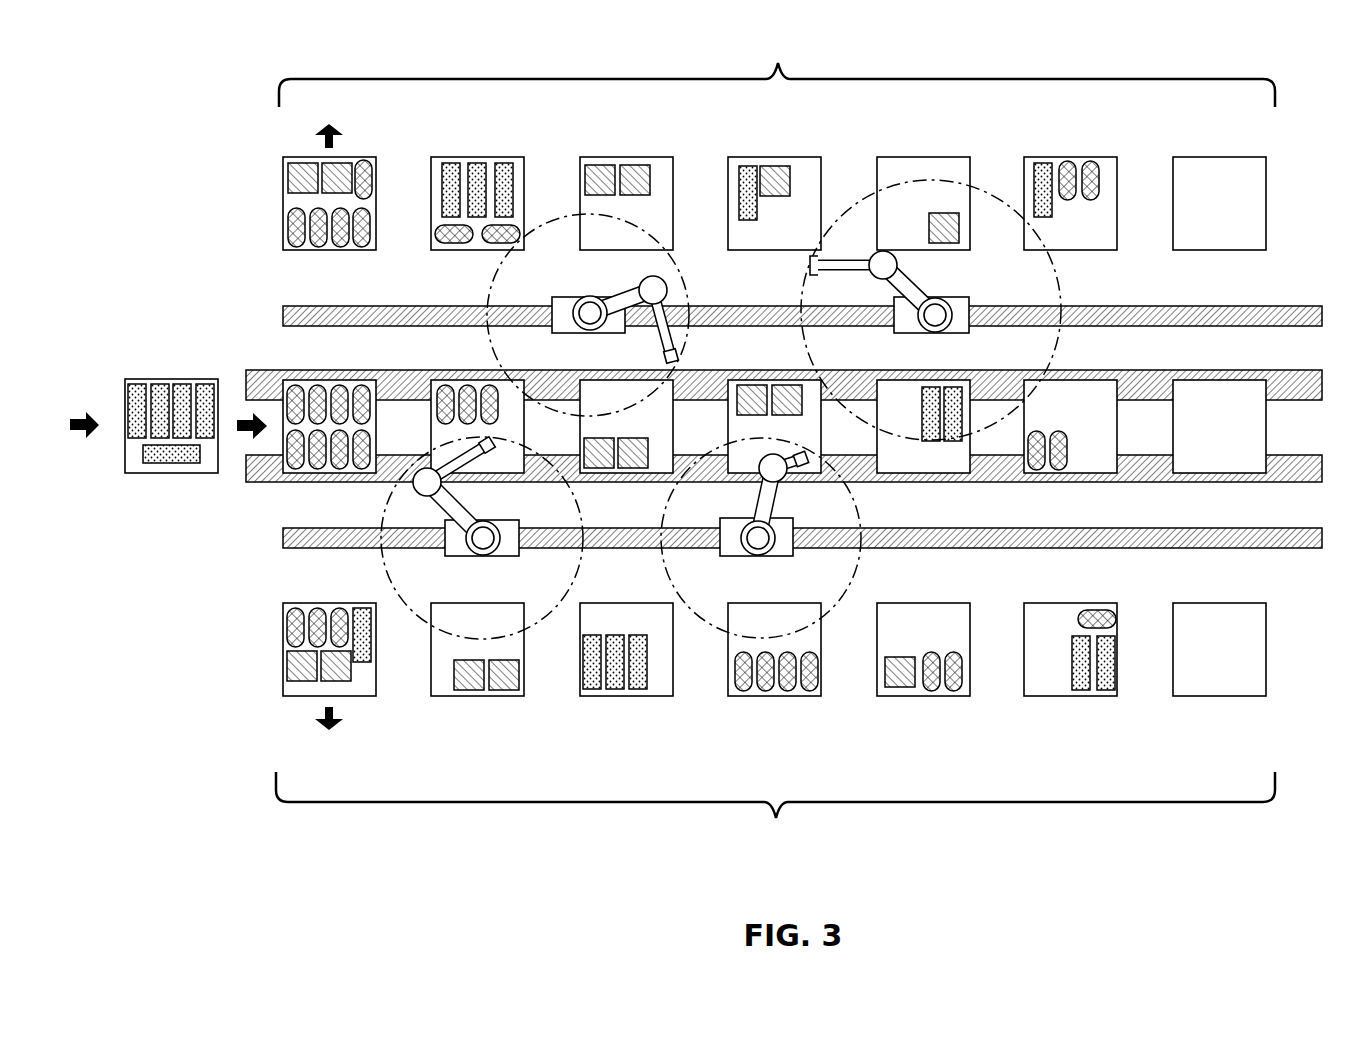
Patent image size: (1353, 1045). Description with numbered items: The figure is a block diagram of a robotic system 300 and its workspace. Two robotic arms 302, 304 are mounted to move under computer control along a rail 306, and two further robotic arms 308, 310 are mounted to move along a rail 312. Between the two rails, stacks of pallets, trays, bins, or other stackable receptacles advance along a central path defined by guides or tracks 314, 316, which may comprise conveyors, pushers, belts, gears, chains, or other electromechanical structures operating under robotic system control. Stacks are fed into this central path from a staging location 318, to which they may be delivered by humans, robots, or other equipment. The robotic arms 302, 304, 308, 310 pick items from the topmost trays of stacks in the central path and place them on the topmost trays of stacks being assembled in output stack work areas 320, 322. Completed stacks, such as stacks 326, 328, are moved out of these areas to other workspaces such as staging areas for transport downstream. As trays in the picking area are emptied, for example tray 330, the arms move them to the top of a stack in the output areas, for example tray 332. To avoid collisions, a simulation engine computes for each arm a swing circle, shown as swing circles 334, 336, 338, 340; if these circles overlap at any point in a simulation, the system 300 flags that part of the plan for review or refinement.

The robotic system 300 is at (188, 72).
The robotic arm 302 is at (508, 556).
The robotic arm 304 is at (783, 557).
The rail 306 is at (908, 549).
The robotic arm 308 is at (575, 296).
The robotic arm 310 is at (960, 296).
The rail 312 is at (1277, 306).
The guide or track 314 is at (1138, 370).
The guide or track 316 is at (1135, 482).
The staging location 318 is at (167, 474).
The output stack work area 320 is at (777, 67).
The output stack work area 322 is at (775, 813).
The completed stack 326 is at (283, 206).
The completed stack 328 is at (283, 647).
The empty tray 330 is at (1267, 440).
The empty tray 332 is at (1267, 662).
The swing circle 334 is at (388, 568).
The swing circle 336 is at (670, 562).
The swing circle 338 is at (488, 293).
The swing circle 340 is at (800, 285).